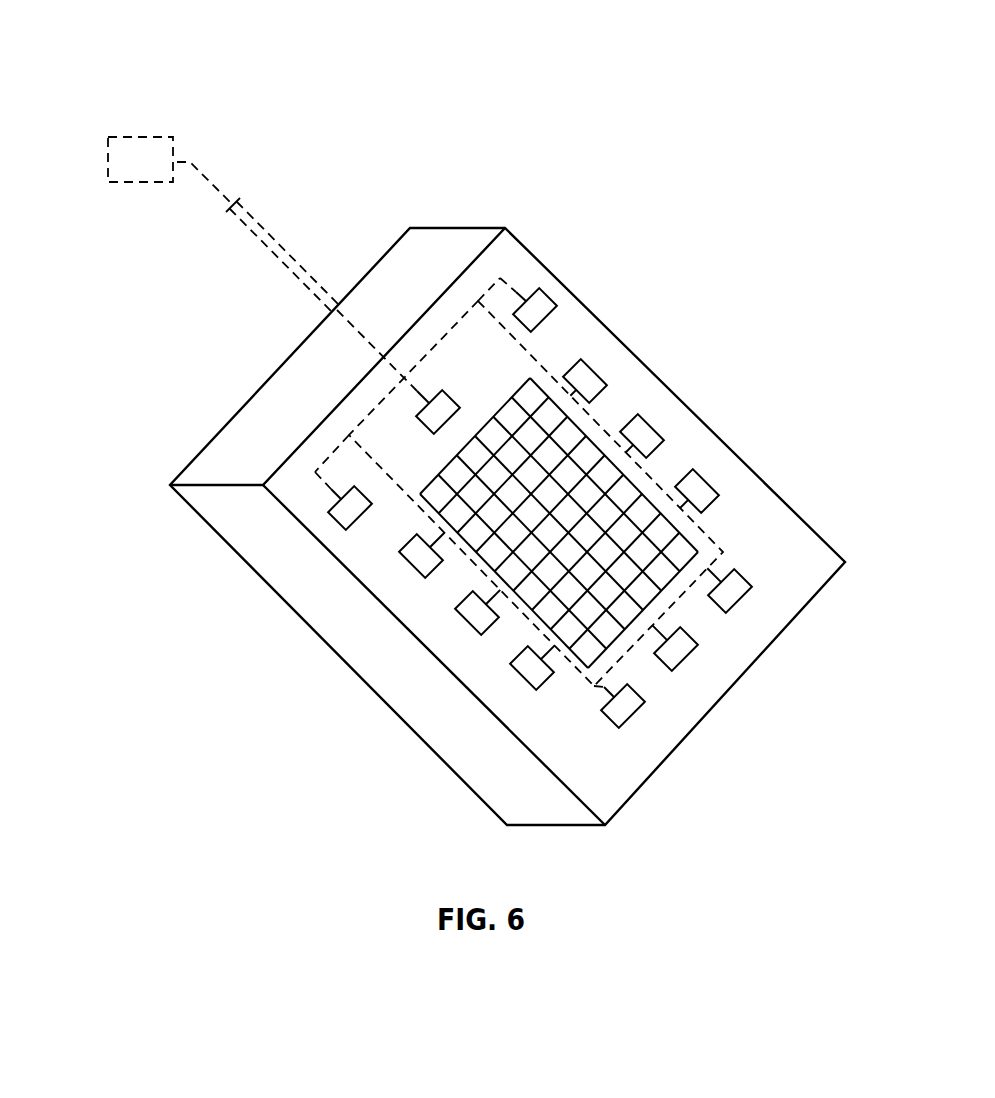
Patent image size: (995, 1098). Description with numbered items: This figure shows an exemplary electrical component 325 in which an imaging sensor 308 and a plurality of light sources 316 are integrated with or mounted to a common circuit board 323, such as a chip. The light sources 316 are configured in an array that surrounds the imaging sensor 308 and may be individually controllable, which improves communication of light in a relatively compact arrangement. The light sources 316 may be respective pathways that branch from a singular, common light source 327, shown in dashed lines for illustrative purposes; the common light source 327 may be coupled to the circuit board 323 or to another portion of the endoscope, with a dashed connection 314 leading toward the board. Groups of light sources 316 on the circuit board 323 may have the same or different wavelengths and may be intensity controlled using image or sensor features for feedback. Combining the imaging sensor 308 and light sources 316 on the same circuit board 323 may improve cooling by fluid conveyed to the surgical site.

The electrical component 325 is at (131, 55).
The circuit board 323 is at (458, 227).
The imaging sensor 308 is at (534, 370).
The light sources 316 is at (651, 427).
The connection cable 314 is at (247, 235).
The common light source 327 is at (165, 173).